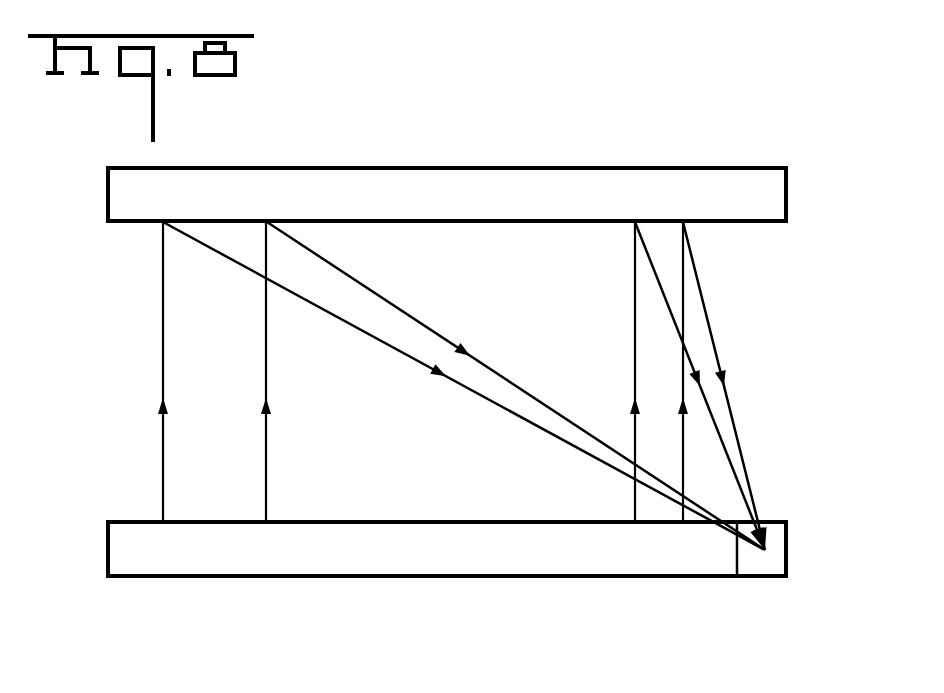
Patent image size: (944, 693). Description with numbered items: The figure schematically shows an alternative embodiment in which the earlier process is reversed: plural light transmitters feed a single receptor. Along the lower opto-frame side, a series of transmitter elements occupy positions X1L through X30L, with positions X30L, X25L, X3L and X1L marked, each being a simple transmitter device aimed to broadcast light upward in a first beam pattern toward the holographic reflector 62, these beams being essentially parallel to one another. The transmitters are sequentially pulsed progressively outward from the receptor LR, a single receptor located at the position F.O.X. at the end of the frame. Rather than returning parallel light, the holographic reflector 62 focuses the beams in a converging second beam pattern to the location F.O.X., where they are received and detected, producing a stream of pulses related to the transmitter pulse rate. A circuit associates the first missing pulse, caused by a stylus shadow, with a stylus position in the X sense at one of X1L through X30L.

The holographic reflector 62 is at (527, 210).
The transmitter position X30L is at (447, 549).
The transmitter position X25L is at (263, 527).
The transmitter position X3L is at (635, 399).
The transmitter position X1L is at (688, 525).
The receptor LR is at (775, 523).
The receptor location F.O.X. is at (812, 578).